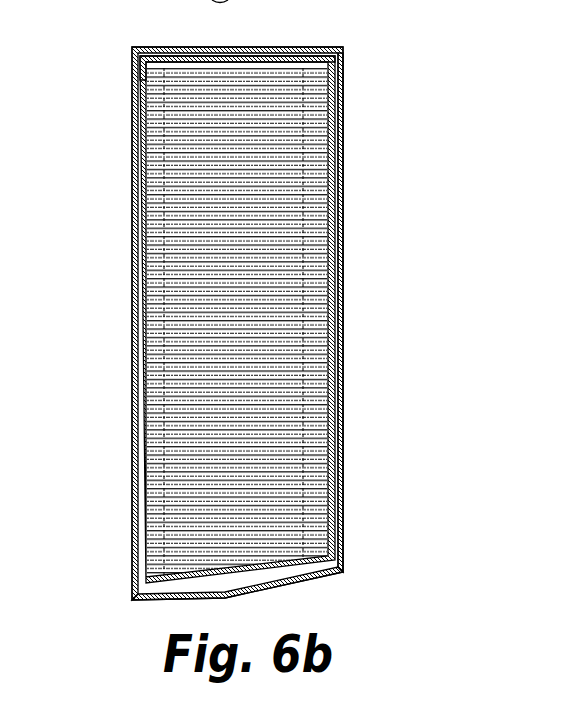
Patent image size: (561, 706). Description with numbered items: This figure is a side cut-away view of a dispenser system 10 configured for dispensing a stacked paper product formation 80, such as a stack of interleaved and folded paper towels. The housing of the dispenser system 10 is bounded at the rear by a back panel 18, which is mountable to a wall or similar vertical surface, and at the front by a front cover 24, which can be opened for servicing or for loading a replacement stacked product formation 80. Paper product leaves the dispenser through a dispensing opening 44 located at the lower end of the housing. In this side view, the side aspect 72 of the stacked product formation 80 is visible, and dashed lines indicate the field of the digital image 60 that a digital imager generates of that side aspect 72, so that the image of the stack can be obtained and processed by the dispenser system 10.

The dispenser system 10 is at (452, 87).
The back panel 18 is at (133, 262).
The front cover 24 is at (342, 290).
The dispensing opening 44 is at (272, 590).
The digital image 60 is at (341, 442).
The side aspect 72 is at (252, 321).
The stacked product formation 80 is at (160, 68).